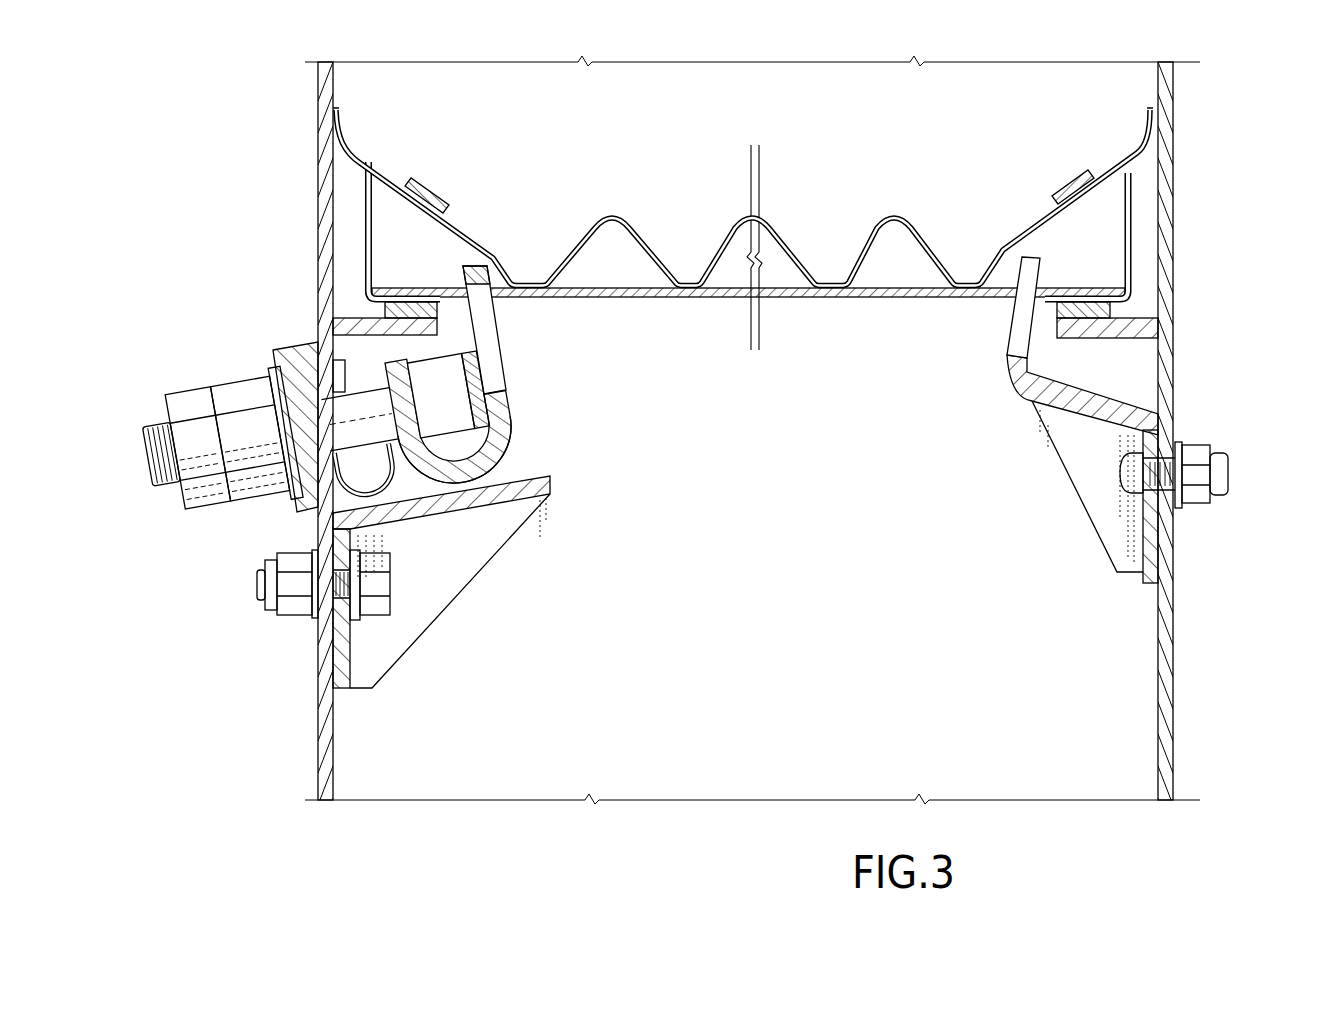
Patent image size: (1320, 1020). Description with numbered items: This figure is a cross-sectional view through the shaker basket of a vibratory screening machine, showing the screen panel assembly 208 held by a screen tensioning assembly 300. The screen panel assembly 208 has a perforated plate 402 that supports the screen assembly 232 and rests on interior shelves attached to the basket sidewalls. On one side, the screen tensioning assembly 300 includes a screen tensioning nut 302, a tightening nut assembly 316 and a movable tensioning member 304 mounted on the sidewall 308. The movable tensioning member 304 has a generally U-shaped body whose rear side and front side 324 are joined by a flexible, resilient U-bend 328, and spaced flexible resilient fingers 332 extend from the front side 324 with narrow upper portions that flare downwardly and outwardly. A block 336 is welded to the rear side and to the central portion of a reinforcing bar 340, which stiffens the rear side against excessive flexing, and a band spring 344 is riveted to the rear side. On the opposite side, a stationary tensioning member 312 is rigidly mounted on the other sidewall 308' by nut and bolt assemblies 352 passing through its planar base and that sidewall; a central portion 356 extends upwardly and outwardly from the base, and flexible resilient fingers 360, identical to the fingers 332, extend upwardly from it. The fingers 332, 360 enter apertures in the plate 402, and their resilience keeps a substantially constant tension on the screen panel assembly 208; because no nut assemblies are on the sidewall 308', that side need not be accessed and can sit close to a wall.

The screen panel assembly 208 is at (803, 214).
The screen assembly 232 is at (612, 219).
The screen tensioning assembly 300 is at (206, 326).
The screen tensioning nut 302 is at (225, 393).
The movable tensioning member 304 is at (500, 435).
The sidewall 308 is at (277, 449).
The other sidewall 308' is at (1224, 449).
The stationary tensioning member 312 is at (1012, 380).
The tightening nut assembly 316 is at (373, 312).
The front side 324 is at (512, 407).
The U-bend 328 is at (494, 492).
The flexible resilient fingers 332 is at (488, 322).
The block 336 is at (452, 365).
The reinforcing bar 340 is at (474, 367).
The band spring 344 is at (417, 515).
The nut and bolt assemblies 352 is at (1203, 504).
The central portion 356 is at (1053, 444).
The flexible resilient fingers 360 is at (1008, 335).
The perforated plate 402 is at (877, 298).